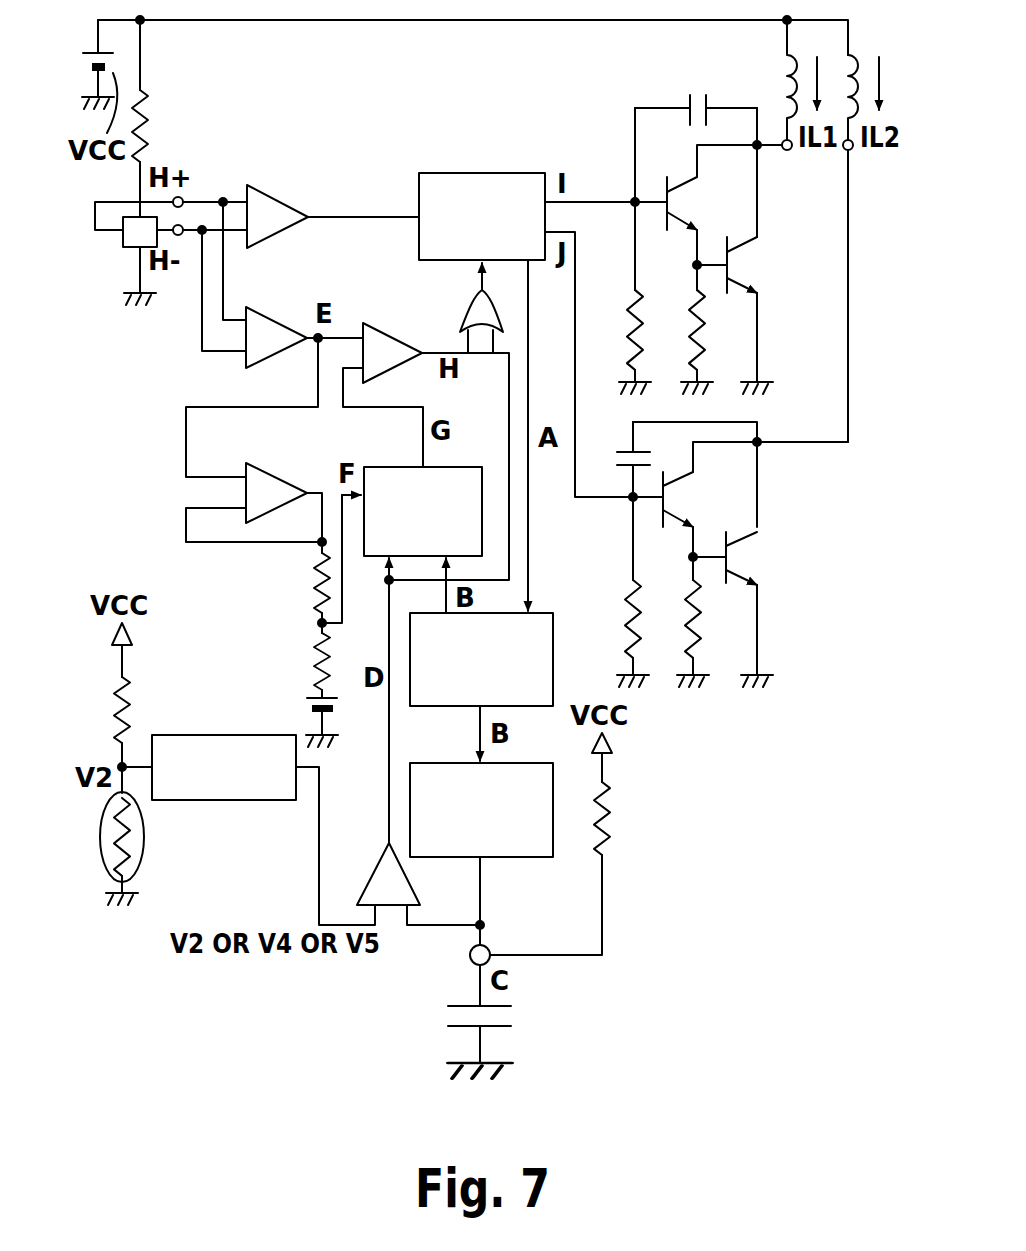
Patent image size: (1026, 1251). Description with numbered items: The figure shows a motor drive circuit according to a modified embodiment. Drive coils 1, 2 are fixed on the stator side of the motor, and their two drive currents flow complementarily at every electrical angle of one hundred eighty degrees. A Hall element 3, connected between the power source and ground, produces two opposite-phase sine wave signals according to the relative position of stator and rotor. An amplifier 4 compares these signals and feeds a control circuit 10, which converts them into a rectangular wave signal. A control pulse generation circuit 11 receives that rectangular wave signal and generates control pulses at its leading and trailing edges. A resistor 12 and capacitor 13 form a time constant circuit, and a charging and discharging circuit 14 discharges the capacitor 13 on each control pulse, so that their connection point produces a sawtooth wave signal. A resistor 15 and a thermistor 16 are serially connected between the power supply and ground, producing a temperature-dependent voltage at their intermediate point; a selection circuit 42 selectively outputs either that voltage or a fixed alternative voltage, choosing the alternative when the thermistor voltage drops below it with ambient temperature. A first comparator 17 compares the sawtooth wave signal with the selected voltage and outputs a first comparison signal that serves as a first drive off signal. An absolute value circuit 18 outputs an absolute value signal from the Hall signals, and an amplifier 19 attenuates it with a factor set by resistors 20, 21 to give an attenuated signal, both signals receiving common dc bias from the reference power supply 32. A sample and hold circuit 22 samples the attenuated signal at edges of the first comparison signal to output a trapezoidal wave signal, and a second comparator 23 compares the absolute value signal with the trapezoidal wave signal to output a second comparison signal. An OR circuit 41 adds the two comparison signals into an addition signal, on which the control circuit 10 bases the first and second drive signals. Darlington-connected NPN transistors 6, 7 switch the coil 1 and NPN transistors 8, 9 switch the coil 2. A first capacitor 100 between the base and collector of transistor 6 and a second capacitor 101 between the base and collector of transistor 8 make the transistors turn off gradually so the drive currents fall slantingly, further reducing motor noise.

The drive coil 1 is at (780, 67).
The drive coil 2 is at (852, 56).
The Hall element 3 is at (125, 252).
The amplifier 4 is at (273, 200).
The NPN transistor 6 is at (688, 200).
The NPN transistor 7 is at (750, 265).
The NPN transistor 8 is at (685, 497).
The NPN transistor 9 is at (750, 557).
The control circuit 10 is at (468, 173).
The control pulse generation circuit 11 is at (542, 612).
The resistor 12 is at (612, 815).
The capacitor 13 is at (515, 1015).
The charging and discharging circuit 14 is at (512, 857).
The resistor 15 is at (133, 680).
The thermistor 16 is at (143, 865).
The first comparator 17 is at (372, 872).
The absolute value circuit 18 is at (265, 312).
The amplifier 19 is at (268, 463).
The resistor 20 is at (314, 586).
The resistor 21 is at (312, 655).
The sample and hold circuit 22 is at (455, 467).
The second comparator 23 is at (383, 325).
The reference power supply 32 is at (305, 707).
The OR circuit 41 is at (463, 302).
The selection circuit 42 is at (222, 800).
The first capacitor 100 is at (695, 85).
The second capacitor 101 is at (615, 457).